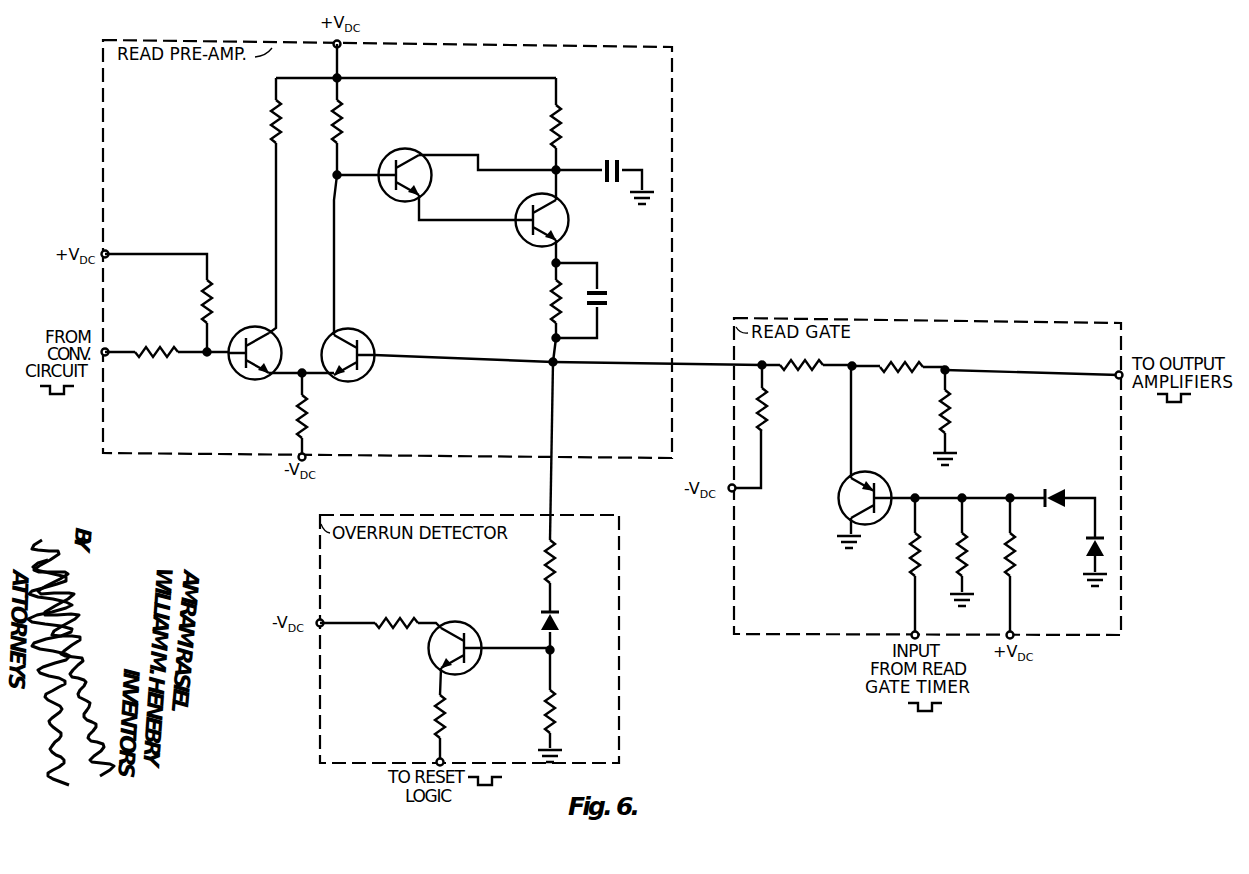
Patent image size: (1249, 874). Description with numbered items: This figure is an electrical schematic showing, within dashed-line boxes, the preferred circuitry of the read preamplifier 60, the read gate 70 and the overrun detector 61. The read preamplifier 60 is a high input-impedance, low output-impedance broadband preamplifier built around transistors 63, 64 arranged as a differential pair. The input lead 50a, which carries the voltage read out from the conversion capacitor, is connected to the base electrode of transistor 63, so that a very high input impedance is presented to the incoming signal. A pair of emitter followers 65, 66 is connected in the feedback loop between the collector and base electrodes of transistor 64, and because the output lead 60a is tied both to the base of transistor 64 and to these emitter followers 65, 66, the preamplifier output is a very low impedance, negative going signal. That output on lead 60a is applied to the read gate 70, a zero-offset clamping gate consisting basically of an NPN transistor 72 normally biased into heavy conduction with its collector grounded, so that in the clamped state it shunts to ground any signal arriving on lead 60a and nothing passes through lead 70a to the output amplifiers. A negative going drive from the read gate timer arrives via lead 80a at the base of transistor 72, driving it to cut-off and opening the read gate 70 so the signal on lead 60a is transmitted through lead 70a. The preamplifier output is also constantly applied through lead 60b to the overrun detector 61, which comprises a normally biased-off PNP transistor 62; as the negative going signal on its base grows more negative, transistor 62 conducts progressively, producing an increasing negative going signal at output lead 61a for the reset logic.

The read preamplifier 60 is at (106, 187).
The input lead 50a is at (123, 350).
The transistor 63 is at (268, 340).
The transistor 64 is at (365, 339).
The emitter follower 65 is at (390, 149).
The emitter follower 66 is at (519, 201).
The output lead 60a is at (634, 364).
The output lead 60b is at (551, 492).
The overrun detector 61 is at (321, 557).
The output lead 61a is at (438, 750).
The PNP transistor 62 is at (468, 634).
The read gate 70 is at (918, 322).
The lead 70a is at (1064, 374).
The NPN transistor 72 is at (840, 500).
The lead 80a is at (912, 623).